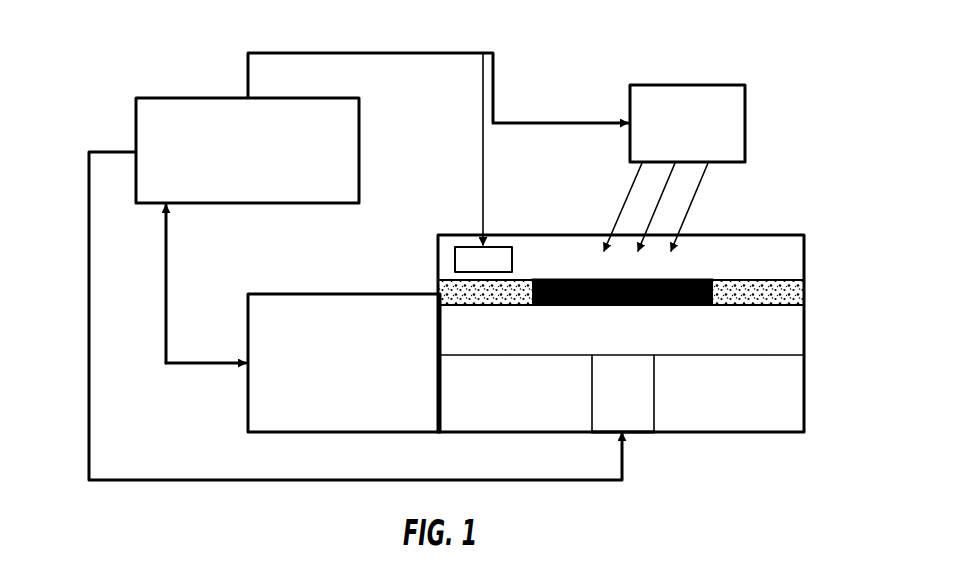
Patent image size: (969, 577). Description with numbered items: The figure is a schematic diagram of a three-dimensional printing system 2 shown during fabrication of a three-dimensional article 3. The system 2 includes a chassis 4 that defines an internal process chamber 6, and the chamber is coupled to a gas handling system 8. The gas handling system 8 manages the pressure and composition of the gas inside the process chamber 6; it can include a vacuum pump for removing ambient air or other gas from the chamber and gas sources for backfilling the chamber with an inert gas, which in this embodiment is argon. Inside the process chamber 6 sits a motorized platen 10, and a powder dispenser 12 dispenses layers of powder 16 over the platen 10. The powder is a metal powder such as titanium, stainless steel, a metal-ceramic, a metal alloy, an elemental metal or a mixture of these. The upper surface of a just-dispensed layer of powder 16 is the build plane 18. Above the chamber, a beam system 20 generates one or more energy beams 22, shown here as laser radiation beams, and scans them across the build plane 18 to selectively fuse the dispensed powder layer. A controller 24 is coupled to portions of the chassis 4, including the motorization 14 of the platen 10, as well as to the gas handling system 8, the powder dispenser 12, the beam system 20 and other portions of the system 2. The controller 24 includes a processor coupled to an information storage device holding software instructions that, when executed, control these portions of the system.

The three-dimensional printing system 2 is at (541, 82).
The three-dimensional article 3 is at (690, 278).
The chassis 4 is at (790, 388).
The process chamber 6 is at (790, 250).
The gas handling system 8 is at (248, 405).
The motorized platen 10 is at (790, 322).
The powder dispenser 12 is at (455, 258).
The motorization 14 is at (640, 402).
The powder 16 is at (800, 292).
The build plane 18 is at (561, 292).
The beam system 20 is at (686, 105).
The energy beams 22 is at (626, 196).
The controller 24 is at (185, 97).